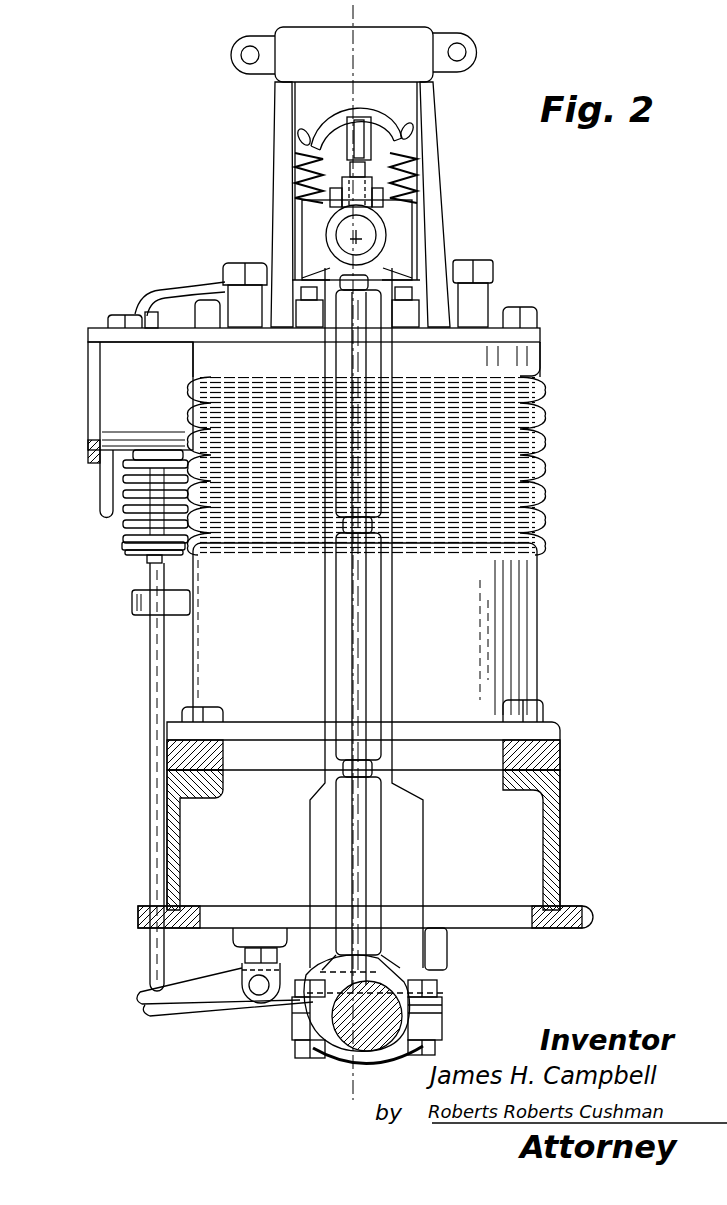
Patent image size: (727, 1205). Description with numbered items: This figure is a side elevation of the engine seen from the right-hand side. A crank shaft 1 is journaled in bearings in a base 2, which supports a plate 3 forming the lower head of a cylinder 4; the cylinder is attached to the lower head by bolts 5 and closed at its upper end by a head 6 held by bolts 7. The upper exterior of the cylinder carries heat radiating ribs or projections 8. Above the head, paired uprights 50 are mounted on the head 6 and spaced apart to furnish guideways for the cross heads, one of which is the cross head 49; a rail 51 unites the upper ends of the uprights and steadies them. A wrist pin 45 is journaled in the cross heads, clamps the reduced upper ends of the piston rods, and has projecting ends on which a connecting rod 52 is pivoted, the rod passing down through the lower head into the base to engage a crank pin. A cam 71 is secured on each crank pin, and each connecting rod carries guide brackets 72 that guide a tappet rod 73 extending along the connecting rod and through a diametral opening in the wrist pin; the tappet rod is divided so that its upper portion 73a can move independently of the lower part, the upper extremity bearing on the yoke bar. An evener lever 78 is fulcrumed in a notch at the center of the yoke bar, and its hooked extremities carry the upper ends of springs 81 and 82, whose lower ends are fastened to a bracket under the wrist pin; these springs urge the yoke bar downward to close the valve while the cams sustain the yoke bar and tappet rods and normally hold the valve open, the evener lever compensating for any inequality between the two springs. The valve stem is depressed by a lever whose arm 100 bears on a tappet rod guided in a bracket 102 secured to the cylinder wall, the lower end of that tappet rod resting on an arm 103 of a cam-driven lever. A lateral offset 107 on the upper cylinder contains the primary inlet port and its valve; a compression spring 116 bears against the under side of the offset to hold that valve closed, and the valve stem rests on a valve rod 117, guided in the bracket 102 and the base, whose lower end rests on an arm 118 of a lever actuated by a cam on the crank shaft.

The crank shaft 1 is at (395, 1028).
The base 2 is at (575, 905).
The plate (lower head) 3 is at (548, 746).
The cylinder 4 is at (530, 630).
The bolts 5 is at (545, 706).
The head (upper head) 6 is at (545, 332).
The bolts 7 is at (535, 312).
The heat radiating ribs or projections 8 is at (540, 424).
The wrist pin 45 is at (340, 236).
The cross head 49 is at (402, 240).
The uprights 50 is at (283, 116).
The rail 51 is at (280, 29).
The connecting rod 52 is at (396, 632).
The cam 71 is at (315, 1024).
The guide brackets 72 is at (345, 535).
The tappet rod 73 is at (352, 610).
The upper portion of tappet rod 73a is at (368, 176).
The evener lever 78 is at (367, 112).
The spring 81 is at (293, 164).
The spring 82 is at (418, 176).
The arm (second arm of lever) 100 is at (168, 298).
The bracket 102 is at (148, 608).
The arm 103 is at (150, 1012).
The lateral offset 107 is at (125, 368).
The compression spring 116 is at (122, 505).
The valve rod 117 is at (155, 706).
The arm 118 is at (242, 970).